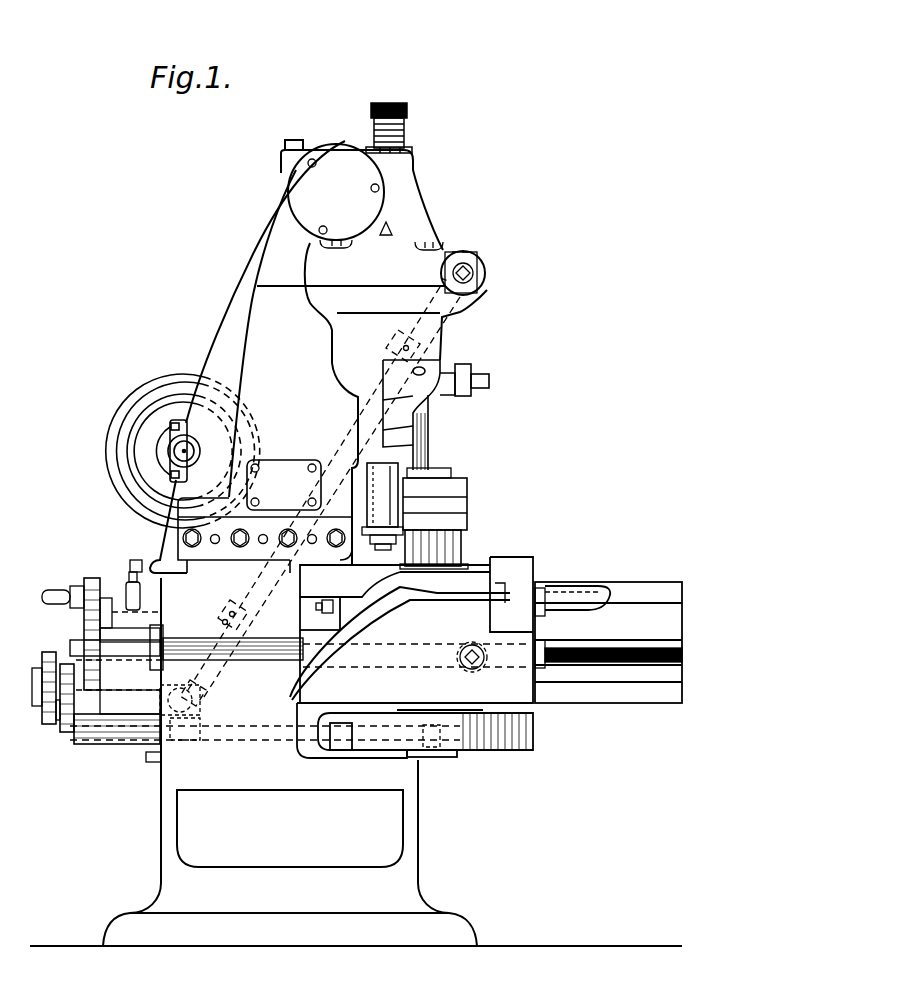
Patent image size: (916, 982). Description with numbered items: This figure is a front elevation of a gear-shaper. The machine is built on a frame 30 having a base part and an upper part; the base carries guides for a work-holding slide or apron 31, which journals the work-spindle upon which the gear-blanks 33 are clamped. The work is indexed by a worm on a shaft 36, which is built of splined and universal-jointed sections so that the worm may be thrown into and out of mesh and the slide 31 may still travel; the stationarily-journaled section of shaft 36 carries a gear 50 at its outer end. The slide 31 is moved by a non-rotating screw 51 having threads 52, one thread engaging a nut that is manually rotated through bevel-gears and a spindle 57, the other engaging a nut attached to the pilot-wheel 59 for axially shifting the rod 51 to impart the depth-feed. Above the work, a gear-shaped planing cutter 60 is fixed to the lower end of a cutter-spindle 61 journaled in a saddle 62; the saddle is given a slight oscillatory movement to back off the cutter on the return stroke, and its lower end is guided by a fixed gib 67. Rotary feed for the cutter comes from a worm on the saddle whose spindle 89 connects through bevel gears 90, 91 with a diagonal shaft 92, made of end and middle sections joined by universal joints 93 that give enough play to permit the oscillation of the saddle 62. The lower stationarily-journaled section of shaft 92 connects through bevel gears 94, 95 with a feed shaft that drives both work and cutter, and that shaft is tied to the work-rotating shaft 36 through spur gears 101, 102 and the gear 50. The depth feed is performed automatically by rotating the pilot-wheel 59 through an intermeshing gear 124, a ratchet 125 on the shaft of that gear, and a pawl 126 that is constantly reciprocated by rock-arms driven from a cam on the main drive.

The frame 30 is at (405, 778).
The work-holding slide 31 is at (515, 568).
The gear-blank 33 is at (462, 512).
The shaft 36 is at (239, 742).
The gear 50 is at (70, 754).
The non-rotating screw 51 is at (270, 648).
The thread 52 is at (583, 672).
The spindle 57 is at (465, 648).
The pilot-wheel 59 is at (68, 592).
The gear-shaped planing cutter 60 is at (444, 548).
The cutter-spindle 61 is at (388, 502).
The saddle 62 is at (390, 253).
The fixed gib 67 is at (267, 530).
The worm spindle 89 is at (484, 272).
The bevel gear 90 is at (470, 252).
The bevel gear 91 is at (441, 278).
The diagonal shaft 92 is at (346, 442).
The universal joint 93 is at (404, 342).
The bevel gear 94 is at (205, 698).
The bevel gear 95 is at (208, 720).
The spur gear 101 is at (46, 652).
The spur gear 102 is at (64, 664).
The gear 124 is at (90, 578).
The ratchet 125 is at (132, 594).
The pawl 126 is at (136, 572).